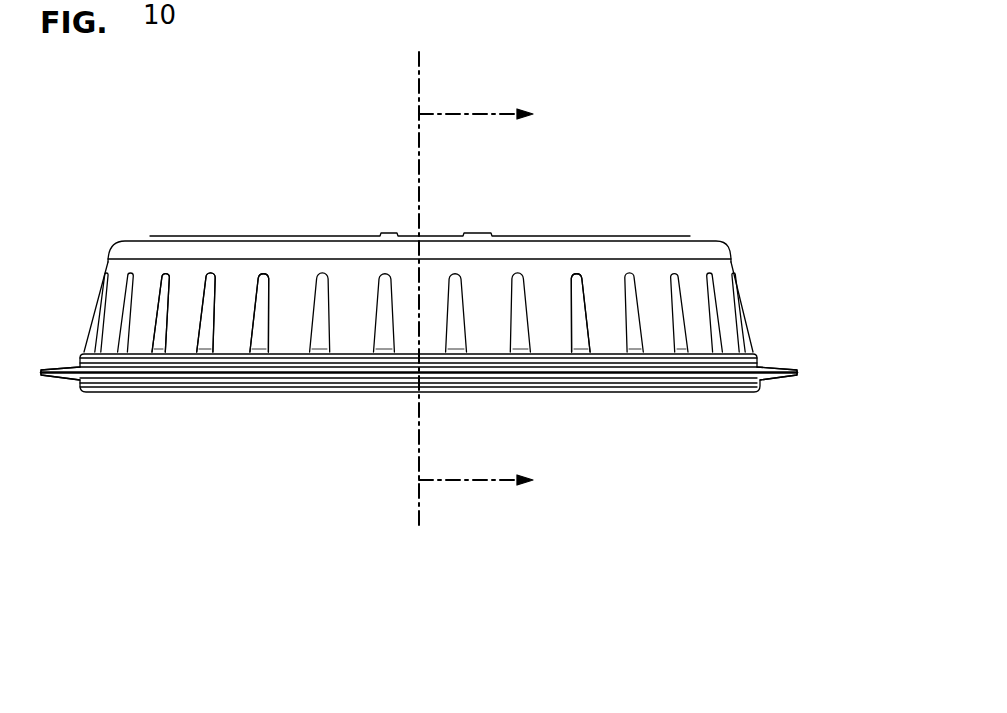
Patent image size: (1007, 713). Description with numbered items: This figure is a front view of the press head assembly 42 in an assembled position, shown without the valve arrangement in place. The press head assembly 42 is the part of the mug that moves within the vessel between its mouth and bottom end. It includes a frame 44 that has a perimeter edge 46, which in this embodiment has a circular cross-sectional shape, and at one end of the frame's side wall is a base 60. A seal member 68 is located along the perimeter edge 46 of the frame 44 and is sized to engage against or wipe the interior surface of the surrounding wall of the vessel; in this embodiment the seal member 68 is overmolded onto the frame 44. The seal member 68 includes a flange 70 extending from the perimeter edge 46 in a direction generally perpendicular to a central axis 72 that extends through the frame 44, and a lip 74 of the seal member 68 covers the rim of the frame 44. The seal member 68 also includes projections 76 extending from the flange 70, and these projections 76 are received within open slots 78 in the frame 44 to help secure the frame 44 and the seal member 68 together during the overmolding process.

The press head assembly 42 is at (743, 130).
The frame 44 is at (720, 253).
The perimeter edge 46 is at (103, 277).
The base 60 is at (123, 241).
The seal member 68 is at (775, 363).
The flange 70 is at (42, 373).
The central axis 72 is at (419, 88).
The lip 74 is at (762, 390).
The projections 76 is at (164, 280).
The open slots 78 is at (218, 297).